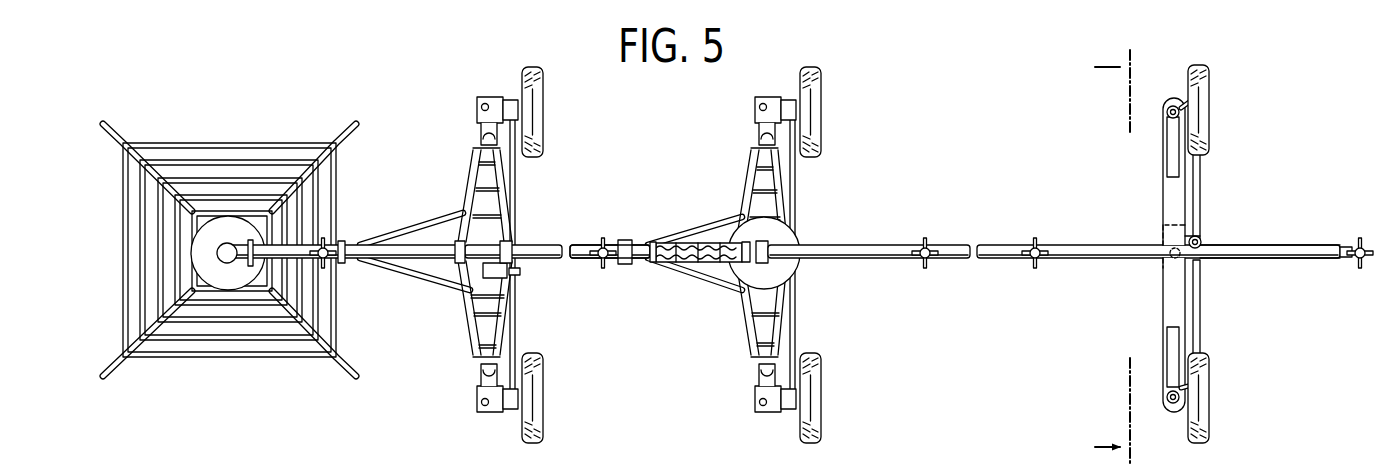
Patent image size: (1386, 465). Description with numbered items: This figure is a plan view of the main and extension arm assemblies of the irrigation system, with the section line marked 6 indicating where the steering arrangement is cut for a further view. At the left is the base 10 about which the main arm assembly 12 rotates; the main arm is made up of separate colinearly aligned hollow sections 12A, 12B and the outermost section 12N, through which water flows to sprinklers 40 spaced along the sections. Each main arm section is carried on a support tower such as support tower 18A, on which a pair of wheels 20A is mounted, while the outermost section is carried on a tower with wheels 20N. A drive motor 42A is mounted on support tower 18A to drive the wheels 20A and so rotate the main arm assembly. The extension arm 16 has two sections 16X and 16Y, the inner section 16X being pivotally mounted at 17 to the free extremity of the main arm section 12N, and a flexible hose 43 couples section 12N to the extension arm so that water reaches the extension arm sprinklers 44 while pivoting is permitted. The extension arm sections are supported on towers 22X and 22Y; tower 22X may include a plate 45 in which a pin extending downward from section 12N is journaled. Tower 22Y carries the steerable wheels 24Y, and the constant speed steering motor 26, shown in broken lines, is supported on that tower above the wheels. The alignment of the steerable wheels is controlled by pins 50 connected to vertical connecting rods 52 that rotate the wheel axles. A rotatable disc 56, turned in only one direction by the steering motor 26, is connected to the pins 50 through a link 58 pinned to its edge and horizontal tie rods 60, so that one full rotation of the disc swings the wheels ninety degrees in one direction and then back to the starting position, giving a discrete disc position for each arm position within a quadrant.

The base 10 is at (219, 360).
The main arm assembly 12 is at (579, 218).
The main arm section 12A is at (416, 262).
The main arm section 12B is at (534, 262).
The outermost main arm section 12N is at (641, 270).
The extension arm 16 is at (989, 234).
The extension arm section 16X is at (862, 262).
The extension arm section 16Y is at (1252, 260).
The pivot mounting 17 is at (686, 226).
The support tower 18A is at (514, 333).
The wheels 20A is at (544, 128).
The wheels 20N is at (823, 108).
The support tower 22X is at (780, 325).
The support tower 22Y is at (1163, 308).
The steerable wheels 24Y is at (1212, 135).
The steering motor 26 is at (1163, 225).
The sprinklers 40 is at (326, 268).
The drive motor 42A is at (485, 277).
The flexible hose 43 is at (718, 270).
The extension arm sprinklers 44 is at (925, 268).
The plate 45 is at (728, 290).
The pin 50 is at (1204, 100).
The vertical connecting rods 52 is at (1166, 114).
The rotatable disc 56 is at (1187, 240).
The link 58 is at (1203, 240).
The horizontal tie rods 60 is at (1202, 322).
The section line 6- 6 is at (1098, 257).